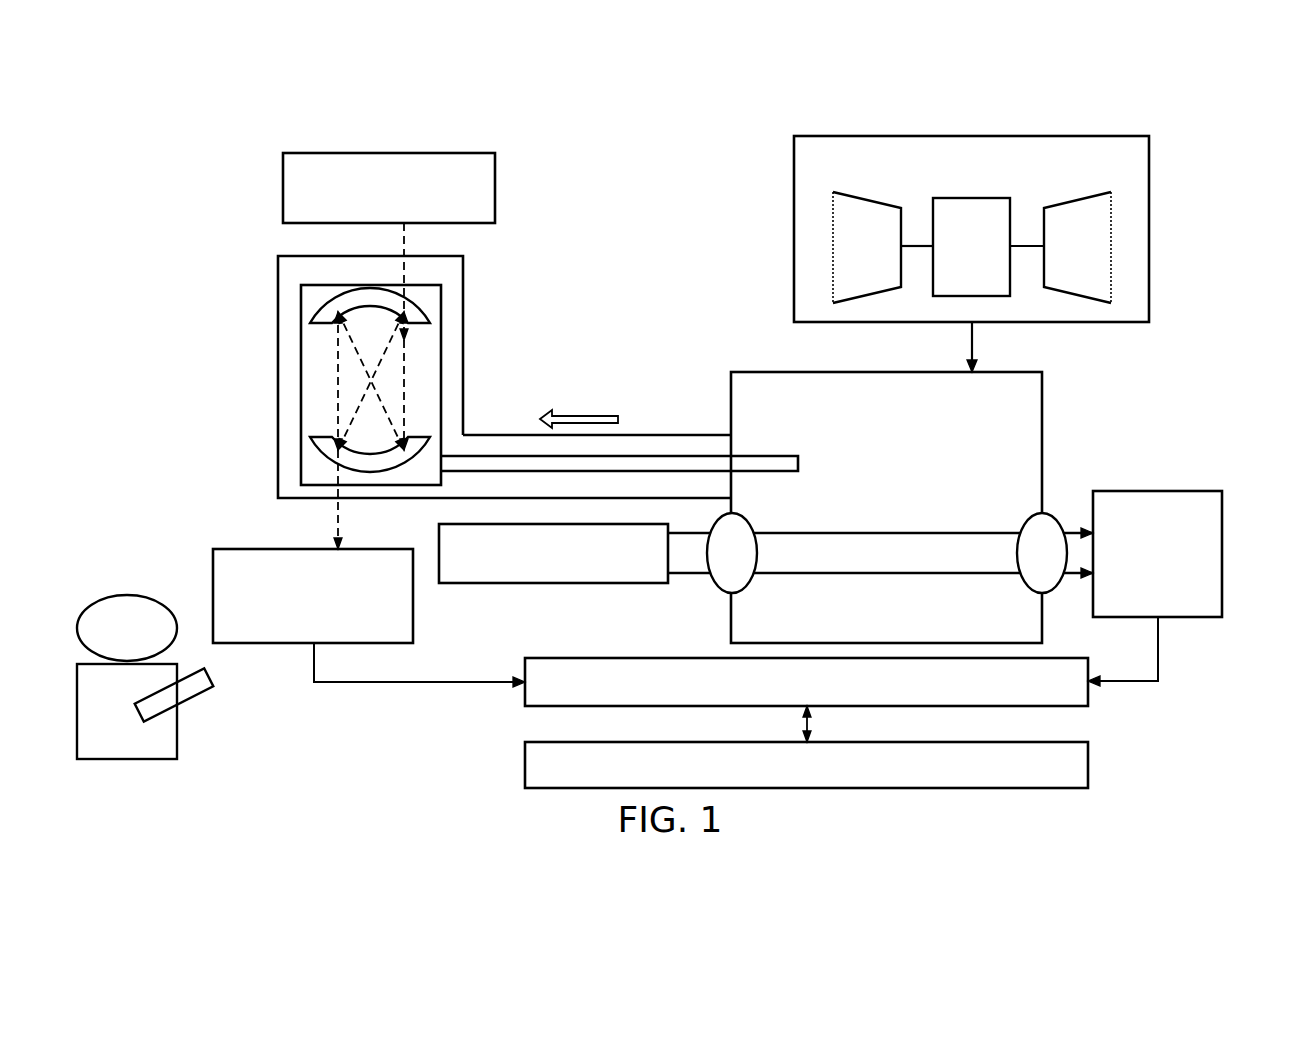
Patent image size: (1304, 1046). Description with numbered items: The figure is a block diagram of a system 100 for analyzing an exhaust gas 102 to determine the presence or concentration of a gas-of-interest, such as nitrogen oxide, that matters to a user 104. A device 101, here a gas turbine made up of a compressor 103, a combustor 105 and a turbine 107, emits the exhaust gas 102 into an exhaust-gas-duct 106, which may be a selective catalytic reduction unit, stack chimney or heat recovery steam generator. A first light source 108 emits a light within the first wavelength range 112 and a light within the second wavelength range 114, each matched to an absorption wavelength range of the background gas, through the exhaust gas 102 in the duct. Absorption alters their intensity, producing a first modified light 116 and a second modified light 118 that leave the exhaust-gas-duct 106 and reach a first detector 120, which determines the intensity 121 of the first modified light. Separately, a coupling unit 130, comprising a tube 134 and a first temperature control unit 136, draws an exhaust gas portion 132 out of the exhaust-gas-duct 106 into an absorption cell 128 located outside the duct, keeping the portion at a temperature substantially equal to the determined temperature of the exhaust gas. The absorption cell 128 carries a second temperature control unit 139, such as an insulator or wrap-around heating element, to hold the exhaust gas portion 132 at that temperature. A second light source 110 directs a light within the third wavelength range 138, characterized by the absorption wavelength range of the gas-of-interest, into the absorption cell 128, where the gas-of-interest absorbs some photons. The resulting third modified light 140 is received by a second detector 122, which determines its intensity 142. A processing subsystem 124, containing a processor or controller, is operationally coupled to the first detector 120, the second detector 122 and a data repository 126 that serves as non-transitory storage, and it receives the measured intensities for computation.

The system 100 is at (290, 112).
The device 101 is at (794, 223).
The exhaust gas 102 is at (968, 346).
The compressor 103 is at (863, 200).
The user 104 is at (178, 737).
The combustor 105 is at (968, 198).
The exhaust-gas-duct 106 is at (738, 371).
The turbine 107 is at (1082, 198).
The first light source 108 is at (533, 586).
The second light source 110 is at (495, 188).
The light within the first wavelength range 112 is at (694, 537).
The light within the second wavelength range 114 is at (677, 578).
The first modified light 116 is at (1067, 527).
The second modified light 118 is at (1069, 582).
The first detector 120 is at (1158, 491).
The intensity of the first modified light 121 is at (1160, 665).
The second detector 122 is at (213, 568).
The processing subsystem 124 is at (1090, 697).
The data repository 126 is at (1090, 758).
The absorption cell 128 is at (301, 369).
The coupling unit 130 is at (568, 372).
The exhaust gas portion 132 is at (370, 380).
The tube 134 is at (492, 463).
The first temperature control unit 136 is at (680, 435).
The light within the third wavelength range 138 is at (402, 243).
The second temperature control unit 139 is at (463, 266).
The third modified light 140 is at (334, 528).
The intensity of the third modified light 142 is at (437, 677).